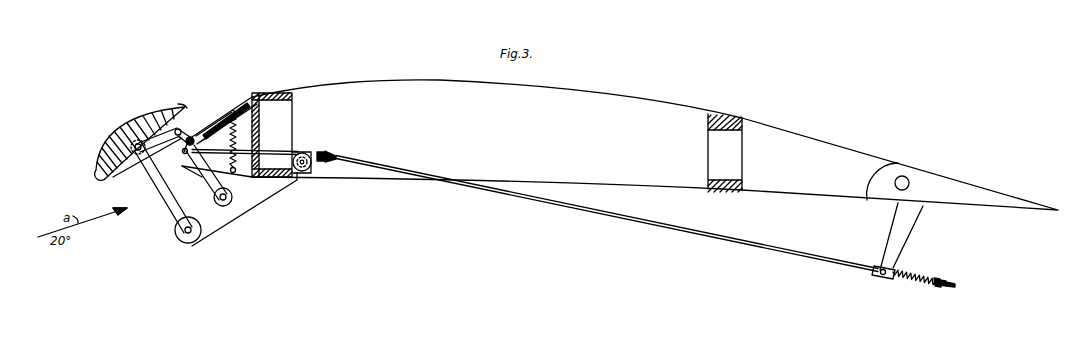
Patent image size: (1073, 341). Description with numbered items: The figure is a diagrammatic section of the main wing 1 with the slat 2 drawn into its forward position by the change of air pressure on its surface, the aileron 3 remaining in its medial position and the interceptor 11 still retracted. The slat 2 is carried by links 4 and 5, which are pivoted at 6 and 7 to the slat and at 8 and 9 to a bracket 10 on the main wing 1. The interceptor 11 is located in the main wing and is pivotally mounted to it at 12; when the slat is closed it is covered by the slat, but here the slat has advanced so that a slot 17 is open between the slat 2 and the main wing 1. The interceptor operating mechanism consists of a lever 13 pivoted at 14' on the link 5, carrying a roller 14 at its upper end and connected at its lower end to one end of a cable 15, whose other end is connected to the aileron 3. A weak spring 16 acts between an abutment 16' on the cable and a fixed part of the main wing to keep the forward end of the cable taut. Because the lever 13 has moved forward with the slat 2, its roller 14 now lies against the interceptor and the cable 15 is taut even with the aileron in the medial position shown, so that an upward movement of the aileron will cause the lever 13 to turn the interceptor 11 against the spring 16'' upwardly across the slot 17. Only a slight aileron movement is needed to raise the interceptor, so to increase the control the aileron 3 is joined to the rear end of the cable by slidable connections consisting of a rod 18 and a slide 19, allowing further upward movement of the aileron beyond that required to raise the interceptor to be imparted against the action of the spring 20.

The main wing 1 is at (467, 85).
The slat 2 is at (103, 150).
The aileron 3 is at (976, 205).
The link 4 is at (155, 180).
The link 5 is at (202, 176).
The pivot 6 is at (134, 142).
The pivot 7 is at (174, 132).
The pivot 8 is at (185, 230).
The pivot 9 is at (230, 198).
The bracket 10 is at (222, 226).
The interceptor 11 is at (230, 115).
The pivot 12 is at (192, 136).
The lever 13 is at (204, 149).
The roller 14 is at (237, 127).
The pivot 14' is at (170, 157).
The cable 15 is at (505, 198).
The weak spring 16 is at (308, 152).
The abutment 16' is at (335, 147).
The spring 16'' is at (245, 145).
The slot 17 is at (182, 105).
The rod 18 is at (918, 276).
The slide 19 is at (878, 278).
The spring 20 is at (909, 286).